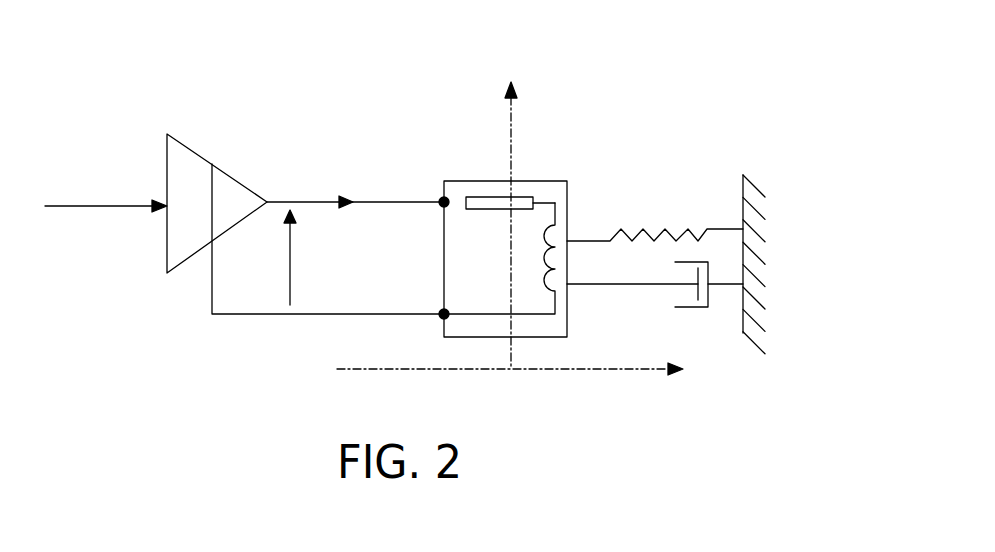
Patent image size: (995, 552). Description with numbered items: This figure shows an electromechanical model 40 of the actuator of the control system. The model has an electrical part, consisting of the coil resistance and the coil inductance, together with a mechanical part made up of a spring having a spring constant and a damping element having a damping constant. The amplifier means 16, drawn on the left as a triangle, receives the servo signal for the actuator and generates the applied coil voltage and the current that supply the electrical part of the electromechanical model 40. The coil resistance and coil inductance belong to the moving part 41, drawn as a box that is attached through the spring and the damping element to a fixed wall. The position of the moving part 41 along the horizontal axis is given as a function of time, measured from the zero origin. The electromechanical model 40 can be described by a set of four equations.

The electromechanical model 40 is at (193, 63).
The amplifier means 16 is at (212, 164).
The moving part 41 is at (557, 181).